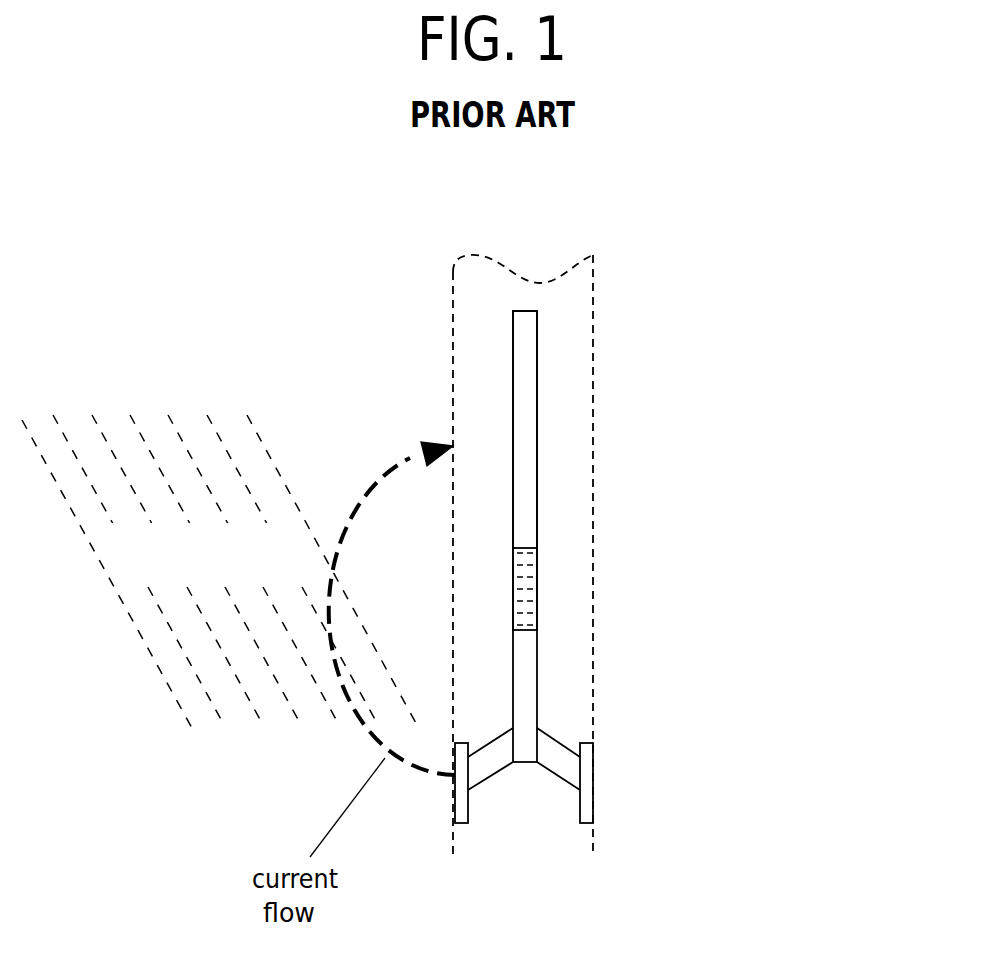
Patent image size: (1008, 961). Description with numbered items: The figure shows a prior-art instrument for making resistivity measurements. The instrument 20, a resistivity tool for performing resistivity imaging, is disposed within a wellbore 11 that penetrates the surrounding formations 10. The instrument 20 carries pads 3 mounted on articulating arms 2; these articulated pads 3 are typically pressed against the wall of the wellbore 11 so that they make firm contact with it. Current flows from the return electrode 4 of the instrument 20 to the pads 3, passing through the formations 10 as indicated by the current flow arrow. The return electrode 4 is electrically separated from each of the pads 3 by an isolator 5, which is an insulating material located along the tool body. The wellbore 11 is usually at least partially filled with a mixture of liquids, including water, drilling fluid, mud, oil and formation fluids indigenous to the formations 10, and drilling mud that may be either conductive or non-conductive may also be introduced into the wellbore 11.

The articulating arms 2 is at (557, 740).
The pads 3 is at (462, 798).
The return electrode 4 is at (522, 381).
The isolator 5 is at (527, 567).
The formations 10 is at (219, 572).
The wellbore 11 is at (578, 424).
The instrument 20 is at (527, 470).